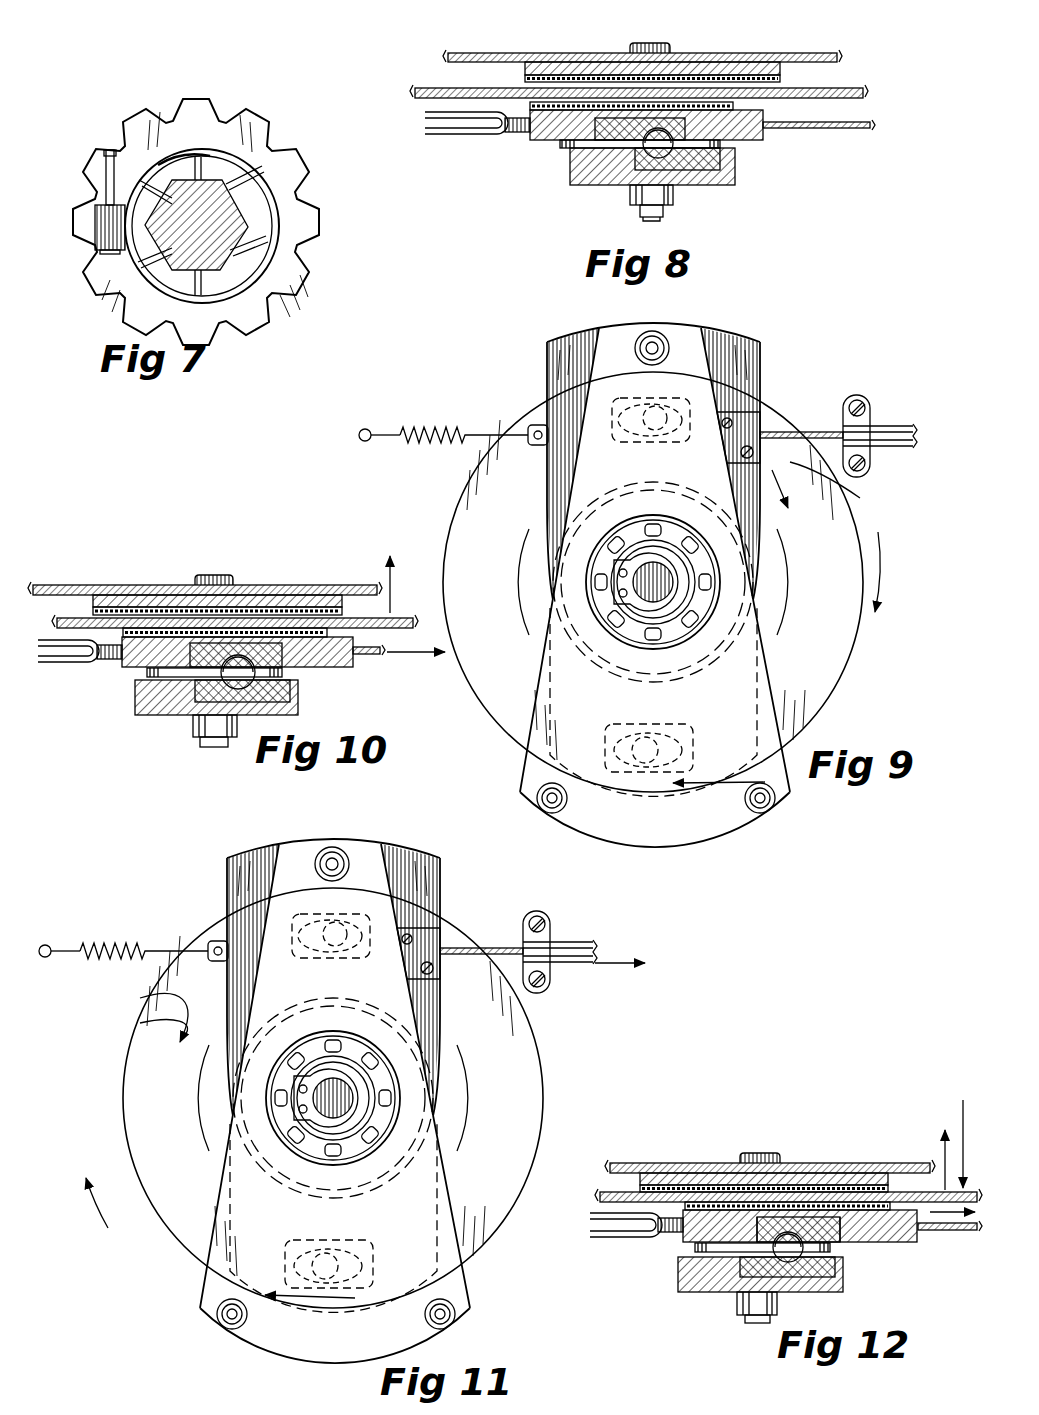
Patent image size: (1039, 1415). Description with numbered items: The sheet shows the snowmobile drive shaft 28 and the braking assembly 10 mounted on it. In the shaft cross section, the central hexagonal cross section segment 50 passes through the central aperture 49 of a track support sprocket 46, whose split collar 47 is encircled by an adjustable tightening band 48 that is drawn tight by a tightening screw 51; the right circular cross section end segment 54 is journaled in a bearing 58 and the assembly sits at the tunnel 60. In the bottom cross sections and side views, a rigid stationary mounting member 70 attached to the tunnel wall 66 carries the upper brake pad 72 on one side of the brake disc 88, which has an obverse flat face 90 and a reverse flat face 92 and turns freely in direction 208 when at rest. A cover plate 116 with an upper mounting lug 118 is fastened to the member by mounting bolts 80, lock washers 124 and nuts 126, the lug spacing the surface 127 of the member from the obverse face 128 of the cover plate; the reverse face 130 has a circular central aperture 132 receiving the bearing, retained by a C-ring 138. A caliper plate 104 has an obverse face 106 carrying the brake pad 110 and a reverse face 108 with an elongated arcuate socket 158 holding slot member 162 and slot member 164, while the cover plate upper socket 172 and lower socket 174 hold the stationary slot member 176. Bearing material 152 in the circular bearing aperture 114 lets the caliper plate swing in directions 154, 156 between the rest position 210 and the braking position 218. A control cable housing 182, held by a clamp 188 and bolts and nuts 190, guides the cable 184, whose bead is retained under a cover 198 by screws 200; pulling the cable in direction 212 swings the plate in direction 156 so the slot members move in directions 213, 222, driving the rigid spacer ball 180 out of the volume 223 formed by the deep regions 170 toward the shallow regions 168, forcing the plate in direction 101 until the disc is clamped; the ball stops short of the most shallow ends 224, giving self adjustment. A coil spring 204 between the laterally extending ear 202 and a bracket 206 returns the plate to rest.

In FIG. 9, the braking assembly 10 is at (795, 322).
In FIG. 7, the drive shaft 28 is at (240, 173).
In FIG. 9, the drive shaft 28 is at (685, 580).
In FIG. 11, the drive shaft 28 is at (300, 1168).
In FIG. 7, the track support sprocket 46 is at (175, 108).
In FIG. 7, the split collar 47 is at (161, 274).
In FIG. 7, the adjustable tightening band 48 is at (93, 226).
In FIG. 7, the central aperture 49 is at (245, 262).
In FIG. 7, the central hexagonal cross section segment 50 is at (248, 214).
In FIG. 7, the tightening screw 51 is at (108, 150).
In FIG. 9, the right circular cross section end segment 54 is at (645, 612).
In FIG. 11, the right circular cross section end segment 54 is at (325, 1080).
In FIG. 9, the bearing 58 is at (605, 590).
In FIG. 11, the bearing 58 is at (290, 1125).
In FIG. 8, the tunnel 60 is at (825, 50).
In FIG. 10, the tunnel 60 is at (45, 583).
In FIG. 12, the tunnel 60 is at (625, 1162).
In FIG. 8, the tunnel wall 66 is at (850, 57).
In FIG. 10, the tunnel wall 66 is at (56, 590).
In FIG. 12, the tunnel wall 66 is at (606, 1168).
In FIG. 8, the rigid stationary mounting member 70 is at (522, 70).
In FIG. 10, the rigid stationary mounting member 70 is at (98, 593).
In FIG. 9, the rigid stationary mounting member 70 is at (545, 350).
In FIG. 11, the rigid stationary mounting member 70 is at (225, 880).
In FIG. 12, the rigid stationary mounting member 70 is at (650, 1172).
In FIG. 8, the upper brake pad 72 is at (770, 68).
In FIG. 10, the upper brake pad 72 is at (118, 604).
In FIG. 12, the upper brake pad 72 is at (665, 1180).
In FIG. 8, the mounting bolt 80 is at (652, 42).
In FIG. 10, the mounting bolt 80 is at (216, 748).
In FIG. 9, the mounting bolt 80 is at (652, 330).
In FIG. 11, the mounting bolt 80 is at (332, 846).
In FIG. 12, the mounting bolt 80 is at (762, 1324).
In FIG. 8, the brake disc 88 is at (415, 95).
In FIG. 10, the brake disc 88 is at (206, 640).
In FIG. 9, the brake disc 88 is at (450, 485).
In FIG. 11, the brake disc 88 is at (548, 1070).
In FIG. 12, the brake disc 88 is at (600, 1210).
In FIG. 8, the obverse flat face 90 is at (862, 92).
In FIG. 10, the obverse flat face 90 is at (82, 620).
In FIG. 12, the obverse flat face 90 is at (600, 1197).
In FIG. 8, the reverse flat face 92 is at (866, 96).
In FIG. 10, the reverse flat face 92 is at (70, 650).
In FIG. 9, the reverse flat face 92 is at (525, 512).
In FIG. 11, the reverse flat face 92 is at (530, 1100).
In FIG. 12, the reverse flat face 92 is at (595, 1200).
In FIG. 10, the direction 101 is at (419, 584).
In FIG. 12, the direction 101 is at (909, 1157).
In FIG. 8, the caliper plate 104 is at (528, 140).
In FIG. 10, the caliper plate 104 is at (340, 668).
In FIG. 9, the caliper plate 104 is at (545, 463).
In FIG. 11, the caliper plate 104 is at (455, 1042).
In FIG. 12, the caliper plate 104 is at (912, 1245).
In FIG. 8, the obverse face 106 is at (755, 126).
In FIG. 8, the reverse face 108 is at (548, 138).
In FIG. 9, the reverse face 108 is at (545, 490).
In FIG. 11, the reverse face 108 is at (215, 1112).
In FIG. 8, the brake pad 110 is at (735, 106).
In FIG. 10, the brake pad 110 is at (265, 636).
In FIG. 12, the brake pad 110 is at (690, 1250).
In FIG. 9, the circular bearing aperture 114 is at (740, 562).
In FIG. 11, the circular bearing aperture 114 is at (440, 1055).
In FIG. 8, the cover plate 116 is at (580, 180).
In FIG. 10, the cover plate 116 is at (142, 700).
In FIG. 9, the cover plate 116 is at (712, 344).
In FIG. 11, the cover plate 116 is at (270, 860).
In FIG. 12, the cover plate 116 is at (688, 1282).
In FIG. 8, the upper mounting lug 118 is at (558, 148).
In FIG. 10, the upper mounting lug 118 is at (145, 676).
In FIG. 12, the upper mounting lug 118 is at (698, 1254).
In FIG. 8, the lock washer 124 is at (675, 198).
In FIG. 10, the lock washer 124 is at (198, 718).
In FIG. 9, the lock washer 124 is at (638, 338).
In FIG. 11, the lock washer 124 is at (350, 855).
In FIG. 12, the lock washer 124 is at (745, 1296).
In FIG. 8, the nut 126 is at (655, 217).
In FIG. 10, the nut 126 is at (213, 748).
In FIG. 9, the nut 126 is at (668, 340).
In FIG. 11, the nut 126 is at (312, 856).
In FIG. 12, the nut 126 is at (752, 1324).
In FIG. 8, the surface of mounting member 127 is at (565, 72).
In FIG. 10, the surface of mounting member 127 is at (150, 610).
In FIG. 8, the obverse face of cover plate 128 is at (742, 140).
In FIG. 8, the reverse face of cover plate 130 is at (592, 183).
In FIG. 9, the circular central aperture 132 is at (623, 540).
In FIG. 11, the circular central aperture 132 is at (325, 1148).
In FIG. 9, the C-ring 138 is at (690, 598).
In FIG. 11, the C-ring 138 is at (290, 1078).
In FIG. 9, the bearing material 152 is at (560, 573).
In FIG. 11, the bearing material 152 is at (440, 1080).
In FIG. 11, the direction 154 is at (133, 1024).
In FIG. 9, the direction 156 is at (838, 489).
In FIG. 11, the direction 156 is at (133, 1013).
In FIG. 8, the elongated arcuate socket 158 is at (695, 140).
In FIG. 8, the slot member 162 is at (640, 128).
In FIG. 10, the slot member 162 is at (195, 645).
In FIG. 9, the slot member 162 is at (620, 470).
In FIG. 12, the slot member 162 is at (750, 1215).
In FIG. 9, the slot member 164 is at (712, 740).
In FIG. 11, the slot member 164 is at (333, 1218).
In FIG. 8, the shallow region 168 is at (700, 150).
In FIG. 8, the deep region 170 is at (635, 165).
In FIG. 8, the upper socket 172 is at (700, 152).
In FIG. 9, the lower socket 174 is at (605, 735).
In FIG. 8, the slot member 176 is at (708, 160).
In FIG. 10, the slot member 176 is at (185, 705).
In FIG. 9, the slot member 176 is at (660, 488).
In FIG. 12, the slot member 176 is at (738, 1285).
In FIG. 8, the rigid spacer ball 180 is at (668, 152).
In FIG. 10, the rigid spacer ball 180 is at (240, 665).
In FIG. 9, the rigid spacer ball 180 is at (700, 386).
In FIG. 11, the rigid spacer ball 180 is at (360, 958).
In FIG. 12, the rigid spacer ball 180 is at (775, 1252).
In FIG. 9, the control cable housing 182 is at (895, 428).
In FIG. 11, the control cable housing 182 is at (595, 946).
In FIG. 8, the cable 184 is at (858, 128).
In FIG. 10, the cable 184 is at (368, 658).
In FIG. 9, the cable 184 is at (828, 432).
In FIG. 11, the cable 184 is at (505, 948).
In FIG. 12, the cable 184 is at (930, 1232).
In FIG. 9, the clamp 188 is at (872, 443).
In FIG. 11, the clamp 188 is at (552, 962).
In FIG. 9, the bolts and nuts 190 is at (870, 392).
In FIG. 11, the bolts and nuts 190 is at (545, 920).
In FIG. 9, the cover 198 is at (745, 420).
In FIG. 11, the cover 198 is at (428, 940).
In FIG. 9, the screw 200 is at (755, 452).
In FIG. 11, the screw 200 is at (436, 975).
In FIG. 8, the laterally extending ear 202 is at (510, 132).
In FIG. 10, the laterally extending ear 202 is at (112, 660).
In FIG. 9, the laterally extending ear 202 is at (535, 430).
In FIG. 11, the laterally extending ear 202 is at (215, 942).
In FIG. 12, the laterally extending ear 202 is at (665, 1234).
In FIG. 8, the coil spring 204 is at (435, 120).
In FIG. 10, the coil spring 204 is at (85, 662).
In FIG. 9, the coil spring 204 is at (415, 430).
In FIG. 11, the coil spring 204 is at (100, 958).
In FIG. 12, the coil spring 204 is at (595, 1228).
In FIG. 9, the bracket 206 is at (360, 432).
In FIG. 11, the bracket 206 is at (45, 945).
In FIG. 9, the direction 208 is at (908, 568).
In FIG. 11, the direction 208 is at (114, 1204).
In FIG. 8, the rest position 210 is at (525, 110).
In FIG. 9, the rest position 210 is at (538, 527).
In FIG. 11, the rest position 210 is at (455, 1040).
In FIG. 10, the direction 212 is at (417, 667).
In FIG. 11, the direction 212 is at (641, 979).
In FIG. 12, the direction 212 is at (956, 1258).
In FIG. 10, the direction 213 is at (300, 660).
In FIG. 9, the direction 213 is at (722, 349).
In FIG. 12, the direction 213 is at (850, 1238).
In FIG. 12, the braking position 218 is at (946, 1127).
In FIG. 9, the direction 222 is at (714, 803).
In FIG. 11, the direction 222 is at (325, 1313).
In FIG. 8, the volume 223 is at (655, 130).
In FIG. 12, the most shallow end 224 is at (755, 1165).